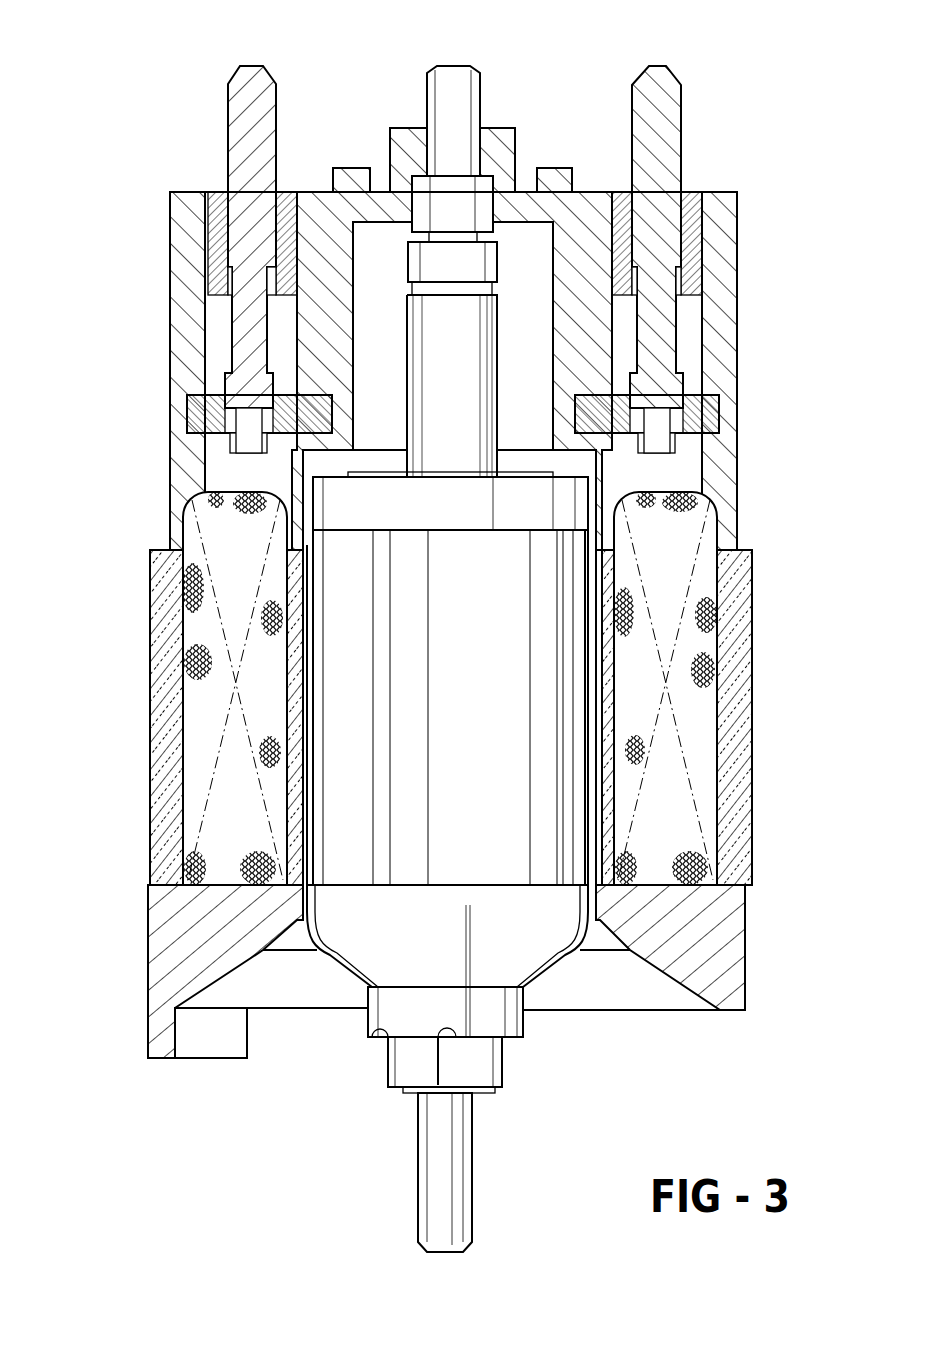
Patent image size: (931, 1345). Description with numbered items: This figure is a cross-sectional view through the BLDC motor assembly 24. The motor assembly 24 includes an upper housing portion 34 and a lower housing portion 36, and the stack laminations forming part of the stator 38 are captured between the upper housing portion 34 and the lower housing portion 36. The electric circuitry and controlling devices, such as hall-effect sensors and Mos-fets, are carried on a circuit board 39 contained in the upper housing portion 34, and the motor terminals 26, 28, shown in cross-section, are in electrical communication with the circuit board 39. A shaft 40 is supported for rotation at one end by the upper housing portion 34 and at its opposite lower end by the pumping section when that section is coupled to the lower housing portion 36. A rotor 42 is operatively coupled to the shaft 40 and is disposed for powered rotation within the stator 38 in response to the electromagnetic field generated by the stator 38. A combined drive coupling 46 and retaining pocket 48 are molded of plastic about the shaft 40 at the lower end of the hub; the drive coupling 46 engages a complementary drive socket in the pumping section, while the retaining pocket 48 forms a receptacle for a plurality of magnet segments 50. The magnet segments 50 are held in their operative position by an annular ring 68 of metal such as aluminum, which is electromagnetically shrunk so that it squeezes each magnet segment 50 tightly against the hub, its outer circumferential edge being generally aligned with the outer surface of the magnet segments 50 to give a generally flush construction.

The BLDC motor assembly 24 is at (88, 161).
The motor terminal 26 is at (252, 66).
The motor terminal 28 is at (675, 72).
The upper housing portion 34 is at (737, 275).
The lower housing portion 36 is at (149, 961).
The stator 38 is at (149, 670).
The circuit board 39 is at (190, 414).
The shaft 40 is at (455, 66).
The rotor 42 is at (551, 783).
The drive coupling 46 is at (390, 1060).
The retaining pocket 48 is at (460, 884).
The magnet segments 50 is at (363, 689).
The annular ring 68 is at (446, 479).